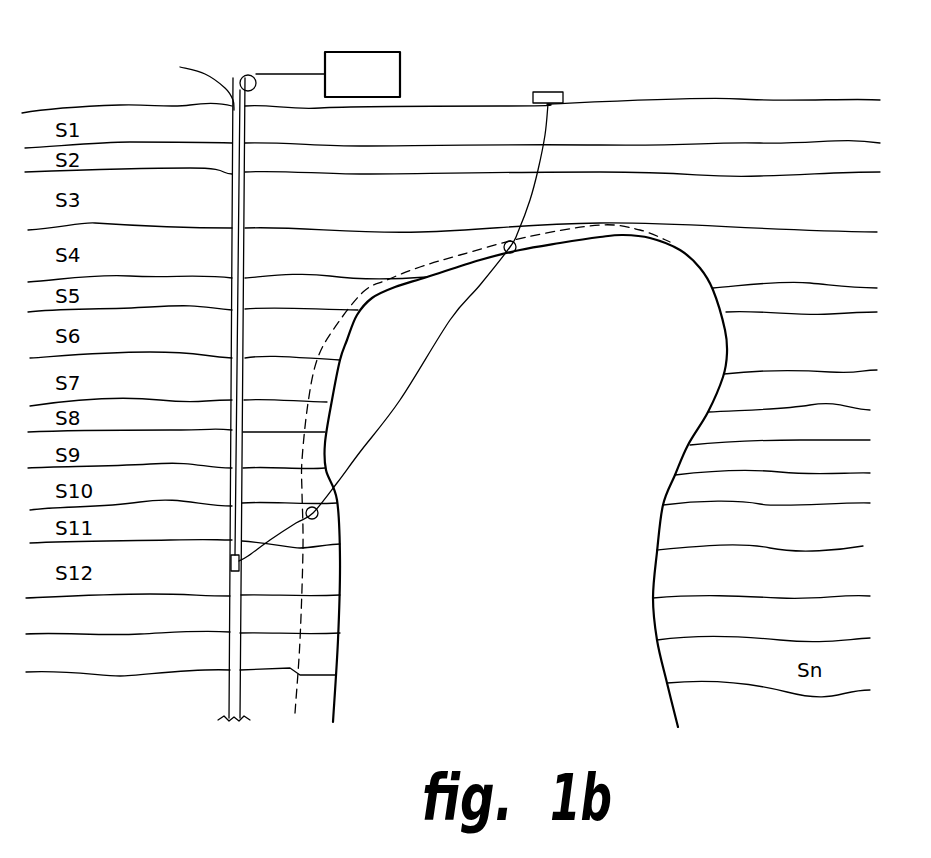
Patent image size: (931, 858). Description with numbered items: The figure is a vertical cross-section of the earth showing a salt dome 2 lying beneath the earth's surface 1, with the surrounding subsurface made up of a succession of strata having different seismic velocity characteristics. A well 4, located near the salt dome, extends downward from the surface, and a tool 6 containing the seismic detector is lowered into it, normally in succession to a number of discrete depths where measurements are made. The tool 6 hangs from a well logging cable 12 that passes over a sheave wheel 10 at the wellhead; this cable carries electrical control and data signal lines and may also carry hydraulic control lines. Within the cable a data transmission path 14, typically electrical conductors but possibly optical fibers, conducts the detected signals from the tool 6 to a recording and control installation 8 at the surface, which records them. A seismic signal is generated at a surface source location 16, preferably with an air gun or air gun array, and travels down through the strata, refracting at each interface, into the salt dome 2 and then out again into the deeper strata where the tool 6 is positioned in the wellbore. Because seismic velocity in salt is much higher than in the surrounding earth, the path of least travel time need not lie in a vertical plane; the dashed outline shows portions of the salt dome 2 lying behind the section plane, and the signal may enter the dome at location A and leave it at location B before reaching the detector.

The earth's surface 1 is at (723, 98).
The salt dome 2 is at (728, 348).
The well 4 is at (232, 197).
The tool 6 is at (230, 562).
The recording and control installation 8 is at (400, 96).
The sheave wheel 10 is at (242, 80).
The well logging cable 12 is at (190, 83).
The data transmission path 14 is at (291, 73).
The source location 16 is at (563, 92).
The location A is at (518, 244).
The location B is at (315, 526).